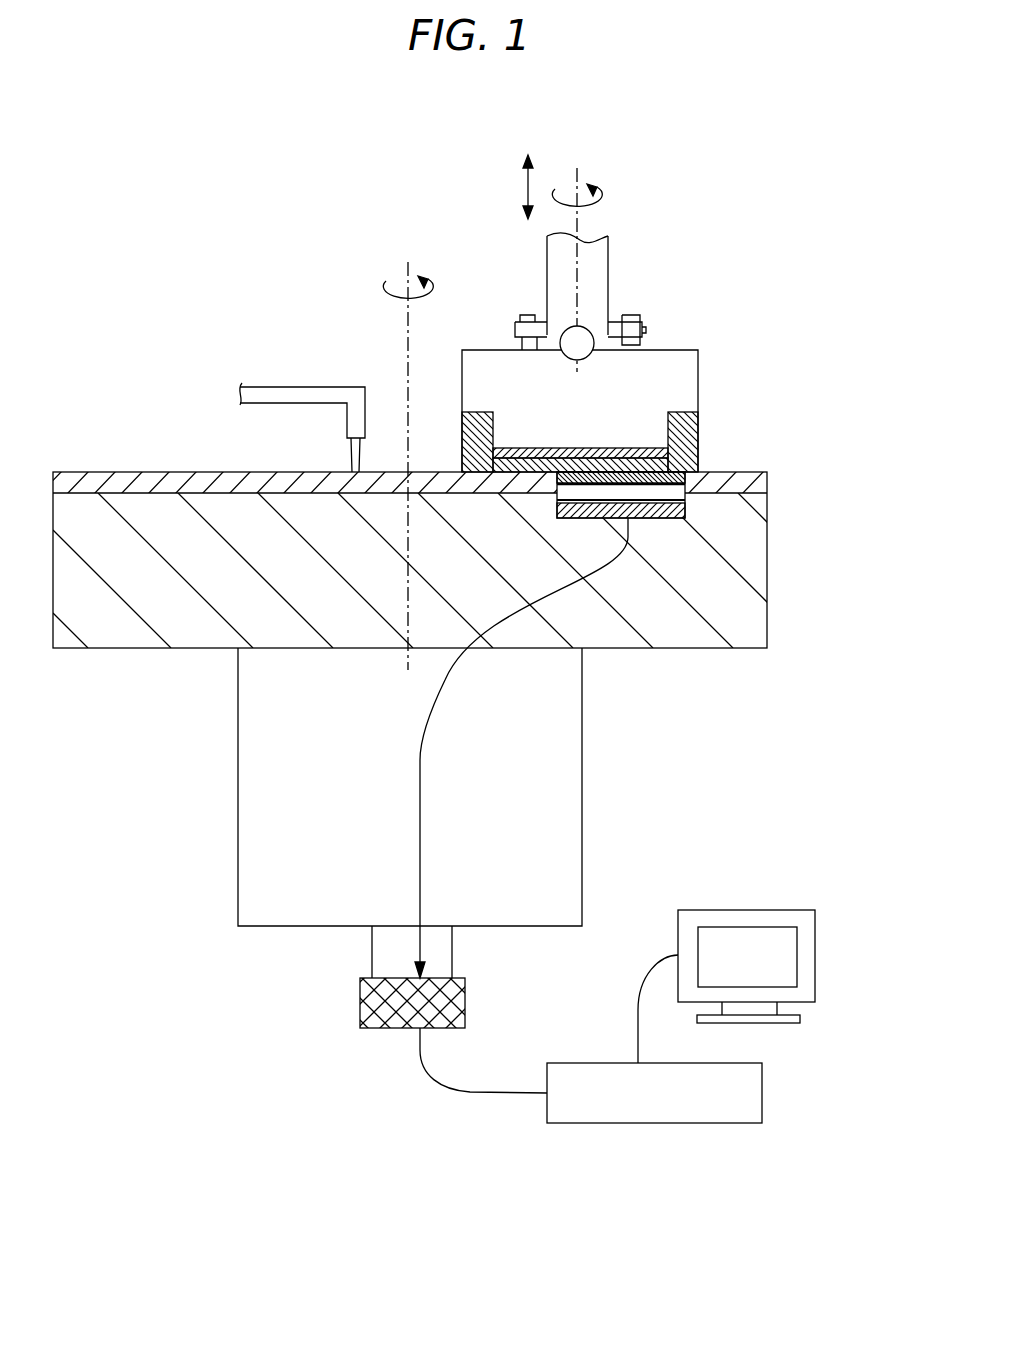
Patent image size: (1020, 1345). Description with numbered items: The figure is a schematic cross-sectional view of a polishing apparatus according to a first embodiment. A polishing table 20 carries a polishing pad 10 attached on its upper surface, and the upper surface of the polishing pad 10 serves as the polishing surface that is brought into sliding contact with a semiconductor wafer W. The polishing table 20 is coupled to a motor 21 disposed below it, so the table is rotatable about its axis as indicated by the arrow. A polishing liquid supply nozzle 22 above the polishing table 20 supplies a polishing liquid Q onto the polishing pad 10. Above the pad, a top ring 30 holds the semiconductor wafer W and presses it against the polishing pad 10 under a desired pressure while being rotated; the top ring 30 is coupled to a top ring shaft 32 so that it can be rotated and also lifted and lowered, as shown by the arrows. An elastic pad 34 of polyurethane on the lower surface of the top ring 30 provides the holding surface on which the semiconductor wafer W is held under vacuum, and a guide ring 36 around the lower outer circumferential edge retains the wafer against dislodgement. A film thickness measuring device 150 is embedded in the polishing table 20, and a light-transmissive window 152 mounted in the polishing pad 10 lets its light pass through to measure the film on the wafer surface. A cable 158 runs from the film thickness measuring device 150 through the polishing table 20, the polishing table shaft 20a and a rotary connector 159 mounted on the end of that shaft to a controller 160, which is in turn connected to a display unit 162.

The polishing pad 10 is at (152, 472).
The polishing table 20 is at (767, 612).
The polishing table shaft 20a is at (452, 950).
The motor 21 is at (582, 733).
The polishing liquid supply nozzle 22 is at (290, 387).
The top ring 30 is at (698, 368).
The top ring shaft 32 is at (608, 263).
The elastic pad 34 is at (660, 453).
The guide ring 36 is at (698, 425).
The film thickness measuring device 150 is at (685, 509).
The light-transmissive window 152 is at (685, 478).
The cable 158 is at (420, 848).
The rotary connector 159 is at (465, 1000).
The controller 160 is at (638, 1123).
The display unit 162 is at (815, 955).
The polishing liquid Q is at (352, 455).
The semiconductor wafer W is at (493, 463).